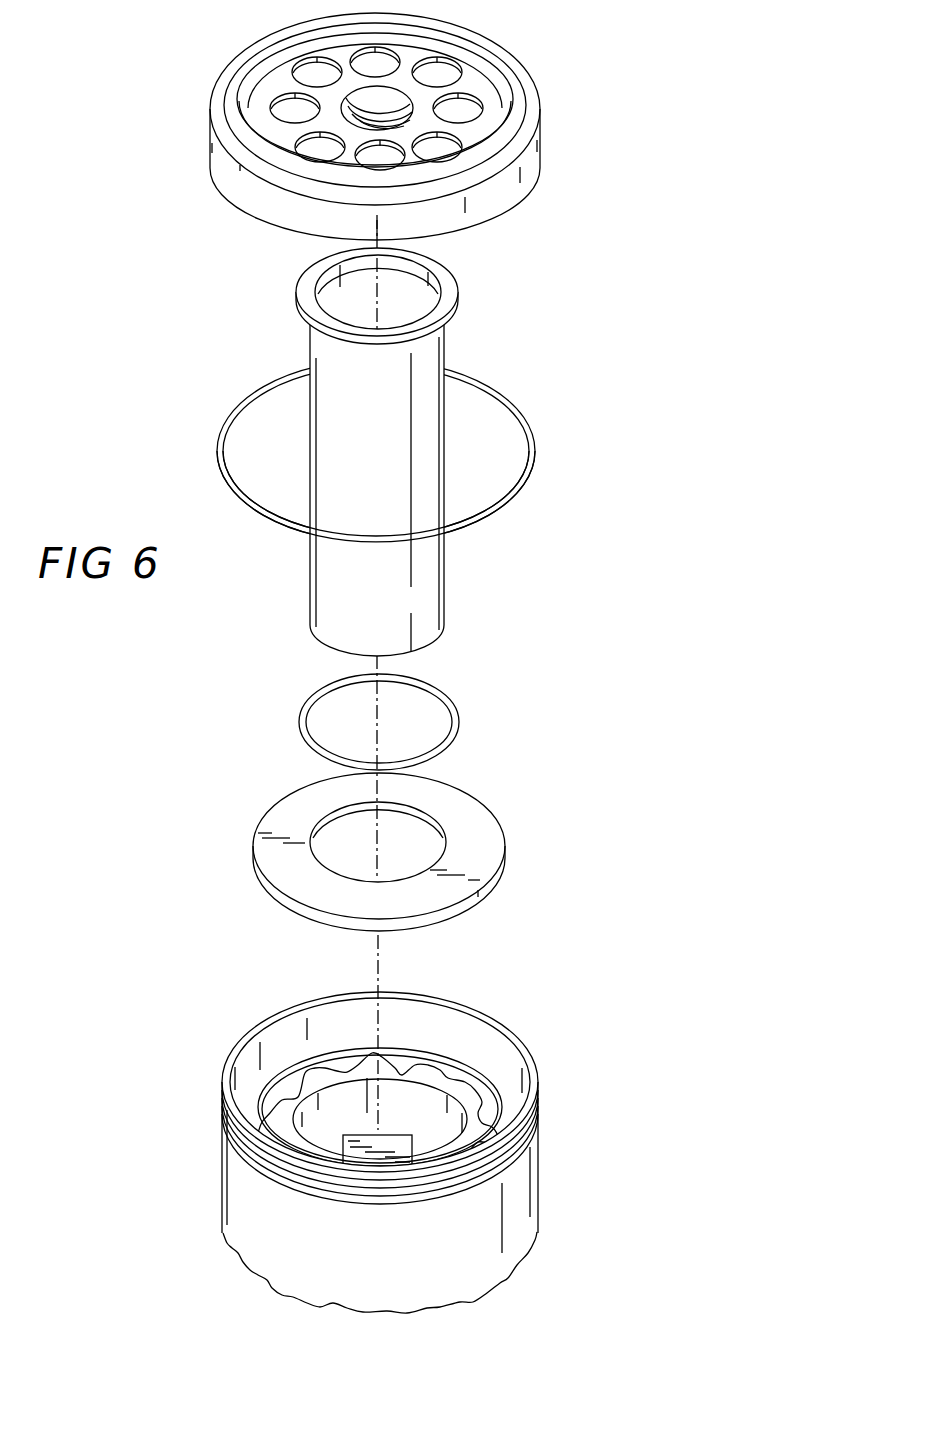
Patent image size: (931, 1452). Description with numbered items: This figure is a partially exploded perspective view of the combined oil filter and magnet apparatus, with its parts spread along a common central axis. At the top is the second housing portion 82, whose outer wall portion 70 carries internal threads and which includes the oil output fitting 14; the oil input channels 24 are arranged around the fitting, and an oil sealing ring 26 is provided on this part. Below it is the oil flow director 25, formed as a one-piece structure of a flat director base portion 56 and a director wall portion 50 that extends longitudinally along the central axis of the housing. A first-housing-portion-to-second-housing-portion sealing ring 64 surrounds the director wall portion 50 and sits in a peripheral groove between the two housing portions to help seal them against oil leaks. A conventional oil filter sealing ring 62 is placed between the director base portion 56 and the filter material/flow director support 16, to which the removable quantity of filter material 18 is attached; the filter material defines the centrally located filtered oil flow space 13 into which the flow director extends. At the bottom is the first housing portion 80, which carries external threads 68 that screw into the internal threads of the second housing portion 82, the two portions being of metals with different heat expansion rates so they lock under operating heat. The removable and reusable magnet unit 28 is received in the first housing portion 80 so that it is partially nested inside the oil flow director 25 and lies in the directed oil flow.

The centrally located filtered oil flow space 13 is at (350, 1095).
The oil output fitting 14 is at (353, 102).
The filter material/flow director support 16 is at (482, 816).
The quantity of filter material 18 is at (483, 1128).
The oil input channels 24 is at (463, 100).
The oil flow director 25 is at (452, 438).
The oil sealing ring 26 is at (497, 90).
The removable and reusable magnet unit 28 is at (399, 1108).
The director wall portion 50 is at (332, 450).
The director base portion 56 is at (455, 292).
The oil filter sealing ring 62 is at (460, 712).
The first-housing-portion-to-second-housing-portion sealing ring 64 is at (517, 487).
The external threads 68 is at (223, 1130).
The outer wall portion 70 is at (505, 192).
The first housing portion 80 is at (528, 1052).
The second housing portion 82 is at (526, 121).